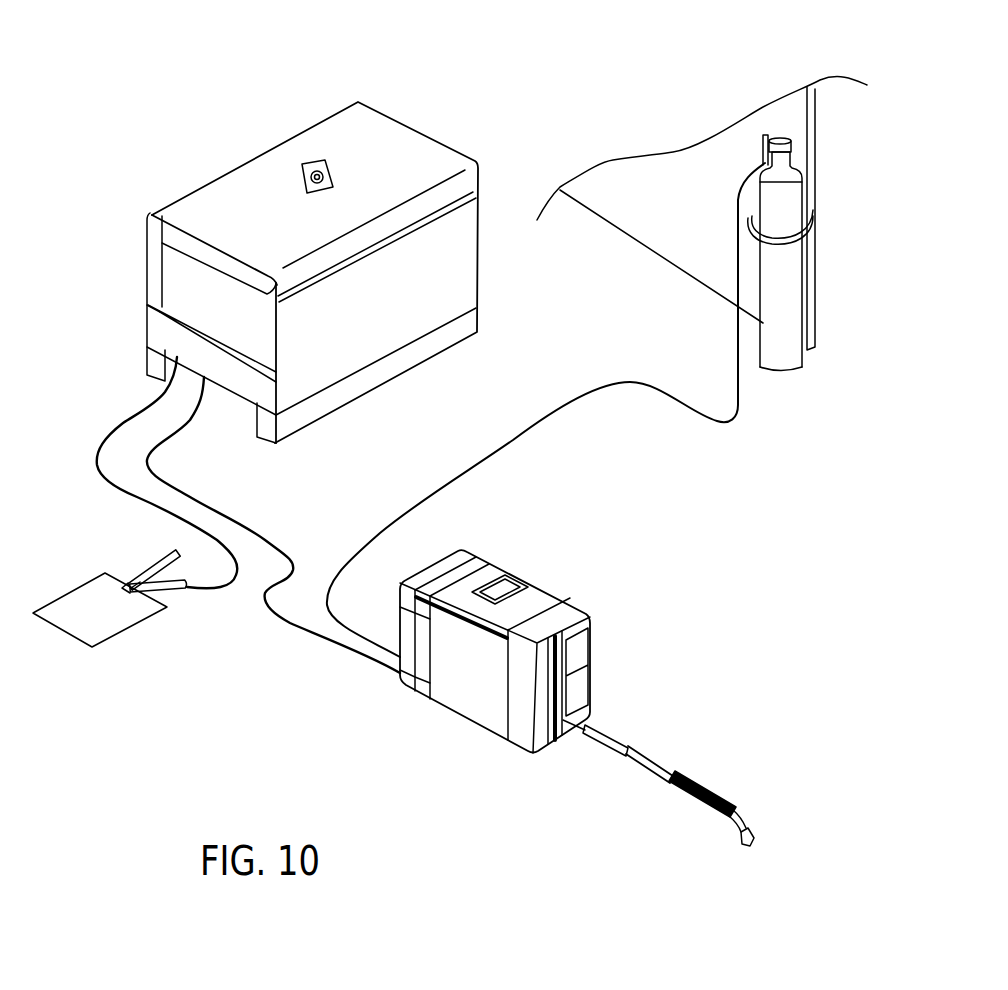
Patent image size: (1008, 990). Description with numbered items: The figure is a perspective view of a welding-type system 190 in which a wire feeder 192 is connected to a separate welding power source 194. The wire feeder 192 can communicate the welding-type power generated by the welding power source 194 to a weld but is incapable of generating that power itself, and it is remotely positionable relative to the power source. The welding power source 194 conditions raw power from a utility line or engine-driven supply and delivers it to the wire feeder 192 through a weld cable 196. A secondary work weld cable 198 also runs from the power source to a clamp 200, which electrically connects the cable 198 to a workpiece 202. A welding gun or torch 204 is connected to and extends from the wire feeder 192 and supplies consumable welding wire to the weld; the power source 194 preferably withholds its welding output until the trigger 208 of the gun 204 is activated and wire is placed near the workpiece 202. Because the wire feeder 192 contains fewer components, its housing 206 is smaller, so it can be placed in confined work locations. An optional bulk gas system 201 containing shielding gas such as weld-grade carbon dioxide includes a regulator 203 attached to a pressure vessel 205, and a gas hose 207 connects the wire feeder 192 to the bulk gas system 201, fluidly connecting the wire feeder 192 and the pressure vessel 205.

The welding-type system 190 is at (568, 111).
The wire feeder 192 is at (584, 502).
The welding power source 194 is at (251, 157).
The weld cable 196 is at (150, 451).
The secondary work weld cable 198 is at (127, 425).
The clamp 200 is at (180, 593).
The bulk gas system 201 is at (722, 121).
The workpiece 202 is at (60, 630).
The regulator 203 is at (797, 138).
The welding gun 204 is at (712, 777).
The pressure vessel 205 is at (793, 252).
The housing 206 is at (463, 723).
The gas hose 207 is at (743, 400).
The trigger 208 is at (698, 806).